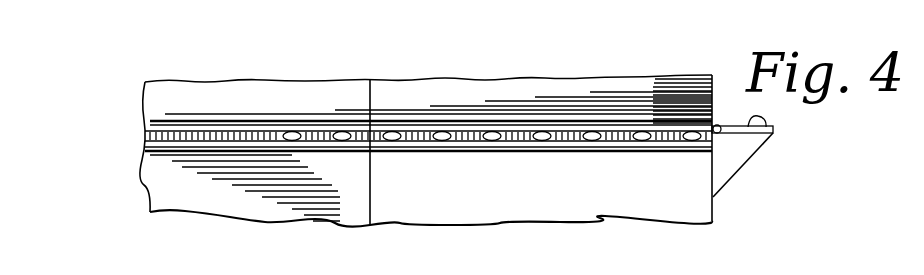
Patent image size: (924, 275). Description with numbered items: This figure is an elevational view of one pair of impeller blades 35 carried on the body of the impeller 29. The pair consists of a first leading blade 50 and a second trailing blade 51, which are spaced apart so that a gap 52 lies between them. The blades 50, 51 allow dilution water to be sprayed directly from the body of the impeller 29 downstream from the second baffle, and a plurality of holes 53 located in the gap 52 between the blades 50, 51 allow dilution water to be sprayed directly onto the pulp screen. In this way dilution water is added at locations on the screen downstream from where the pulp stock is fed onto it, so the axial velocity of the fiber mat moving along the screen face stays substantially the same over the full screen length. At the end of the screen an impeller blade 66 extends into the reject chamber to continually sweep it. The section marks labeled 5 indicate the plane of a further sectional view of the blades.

The impeller 29 is at (686, 85).
The impeller blades 35 is at (505, 123).
The gap 52 is at (463, 131).
The holes 53 is at (438, 147).
The second trailing blade 51 is at (522, 151).
The first leading blade 50 is at (626, 131).
The impeller blade 66 is at (773, 133).
The section line 5- 5 is at (566, 117).